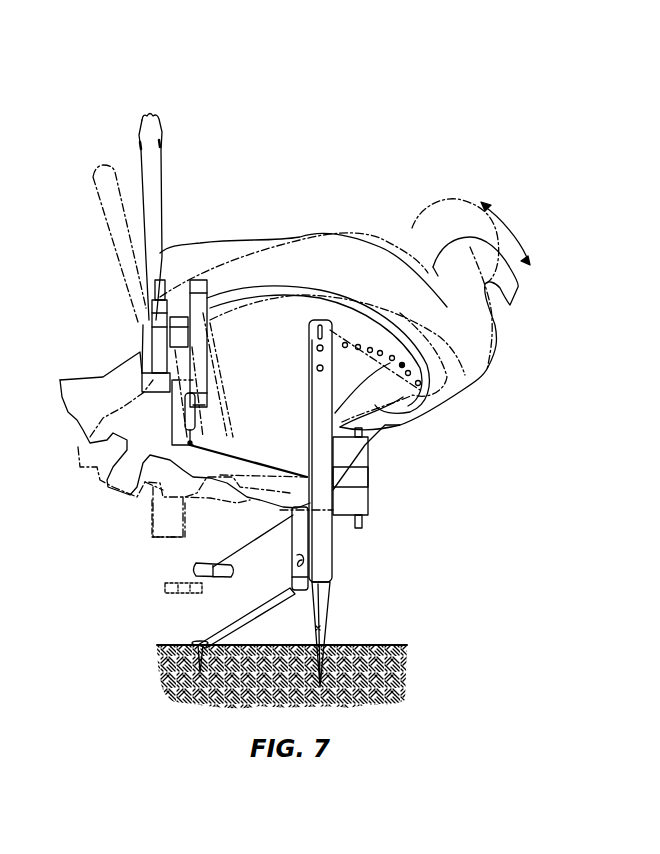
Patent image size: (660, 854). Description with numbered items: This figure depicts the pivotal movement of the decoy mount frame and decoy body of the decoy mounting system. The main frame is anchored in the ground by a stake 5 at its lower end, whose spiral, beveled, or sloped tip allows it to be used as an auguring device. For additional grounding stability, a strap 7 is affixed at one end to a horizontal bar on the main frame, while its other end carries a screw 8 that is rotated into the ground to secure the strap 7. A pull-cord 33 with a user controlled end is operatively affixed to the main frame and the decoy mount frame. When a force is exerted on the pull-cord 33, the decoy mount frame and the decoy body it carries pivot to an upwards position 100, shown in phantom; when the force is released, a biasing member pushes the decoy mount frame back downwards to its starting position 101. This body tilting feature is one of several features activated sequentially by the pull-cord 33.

The upwards position 100 is at (455, 197).
The starting position 101 is at (517, 288).
The pull-cord 33 is at (255, 543).
The strap 7 is at (263, 610).
The screw 8 is at (172, 680).
The stake 5 is at (330, 657).